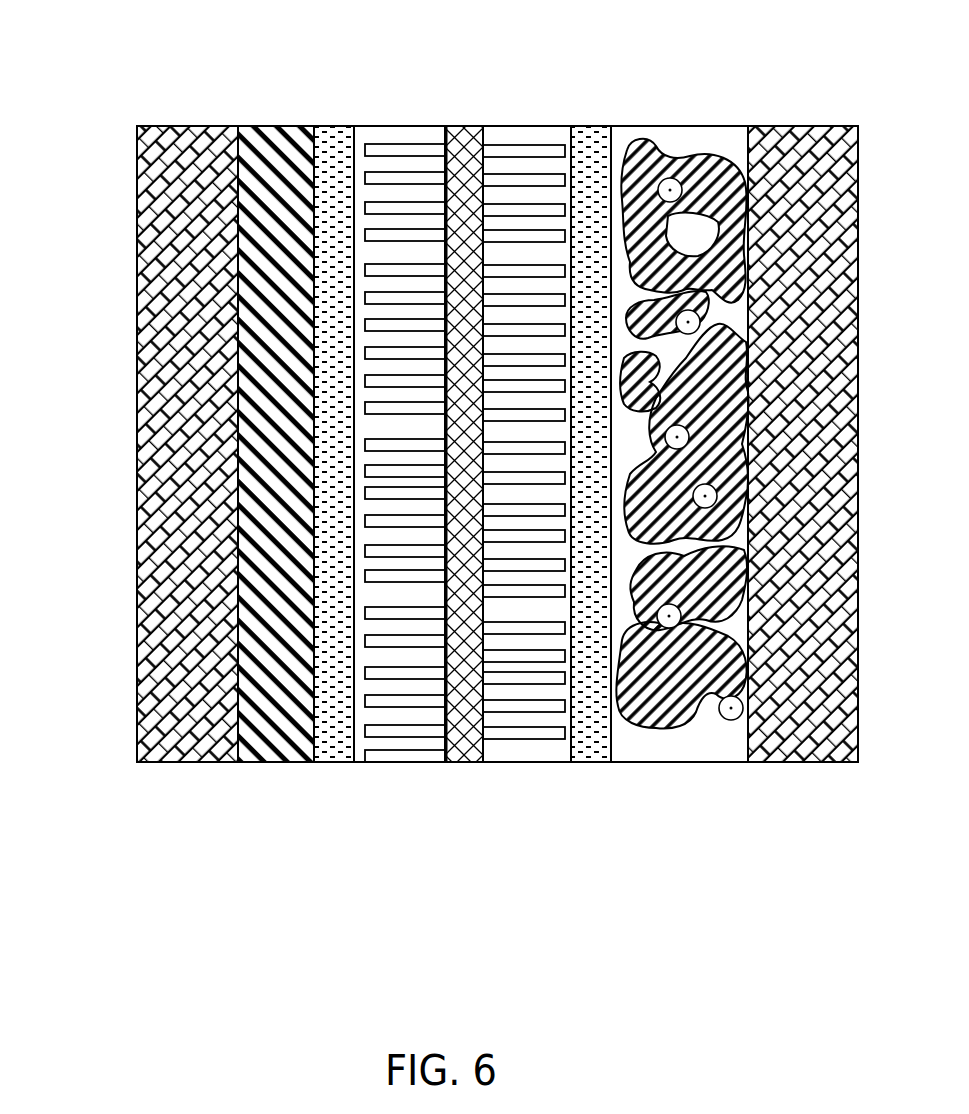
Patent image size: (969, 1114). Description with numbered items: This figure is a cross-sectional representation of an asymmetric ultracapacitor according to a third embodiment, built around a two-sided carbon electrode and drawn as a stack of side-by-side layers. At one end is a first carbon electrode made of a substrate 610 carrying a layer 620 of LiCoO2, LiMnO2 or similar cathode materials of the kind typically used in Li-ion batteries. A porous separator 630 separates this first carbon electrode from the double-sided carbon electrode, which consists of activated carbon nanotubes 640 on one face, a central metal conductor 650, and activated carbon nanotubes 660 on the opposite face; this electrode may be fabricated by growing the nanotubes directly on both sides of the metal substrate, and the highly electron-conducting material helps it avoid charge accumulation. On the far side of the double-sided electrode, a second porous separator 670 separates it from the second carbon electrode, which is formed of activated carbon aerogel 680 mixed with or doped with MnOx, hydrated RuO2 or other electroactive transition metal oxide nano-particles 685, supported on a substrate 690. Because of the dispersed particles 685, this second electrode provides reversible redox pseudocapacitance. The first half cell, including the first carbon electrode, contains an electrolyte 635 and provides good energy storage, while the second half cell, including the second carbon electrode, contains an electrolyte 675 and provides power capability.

The substrate 610 is at (198, 140).
The layer of LiCoO2, LiMnO2 or similar cathode materials 620 is at (280, 742).
The porous separator 630 is at (340, 145).
The electrolyte 635 is at (385, 137).
The activated carbon nanotubes 640 is at (412, 752).
The metal conductor 650 is at (470, 142).
The activated carbon nanotubes 660 is at (542, 733).
The porous separator 670 is at (597, 147).
The electrolyte 675 is at (528, 136).
The activated carbon aerogel 680 is at (687, 670).
The electroactive nano-particles 685 is at (731, 714).
The substrate 690 is at (792, 147).